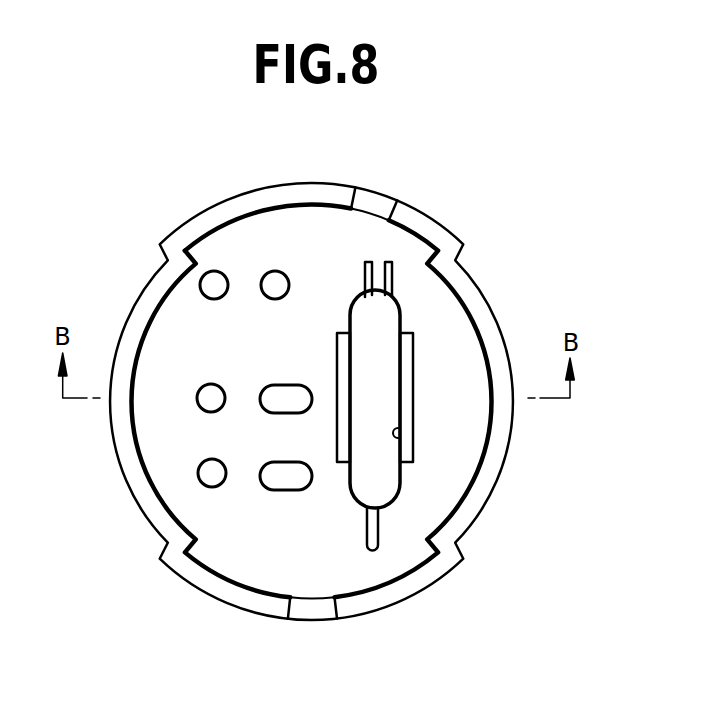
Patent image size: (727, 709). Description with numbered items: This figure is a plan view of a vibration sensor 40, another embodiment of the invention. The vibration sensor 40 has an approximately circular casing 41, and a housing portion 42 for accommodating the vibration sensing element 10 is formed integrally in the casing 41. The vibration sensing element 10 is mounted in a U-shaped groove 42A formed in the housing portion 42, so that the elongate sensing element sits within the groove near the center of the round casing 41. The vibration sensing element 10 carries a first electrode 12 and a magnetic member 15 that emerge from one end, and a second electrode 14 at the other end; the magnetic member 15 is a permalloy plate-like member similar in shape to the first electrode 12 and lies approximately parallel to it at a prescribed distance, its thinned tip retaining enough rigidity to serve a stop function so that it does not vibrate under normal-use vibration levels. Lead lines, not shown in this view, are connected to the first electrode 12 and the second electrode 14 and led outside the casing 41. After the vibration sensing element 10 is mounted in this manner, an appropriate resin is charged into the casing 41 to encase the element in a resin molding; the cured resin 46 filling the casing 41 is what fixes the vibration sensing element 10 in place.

The vibration sensing element 10 is at (385, 485).
The first electrode 12 is at (359, 265).
The second electrode 14 is at (380, 524).
The magnetic member 15 is at (395, 263).
The vibration sensor 40 is at (530, 223).
The casing 41 is at (220, 208).
The housing portion 42 is at (407, 407).
The U-shaped groove 42A is at (397, 435).
The resin 46 is at (193, 317).